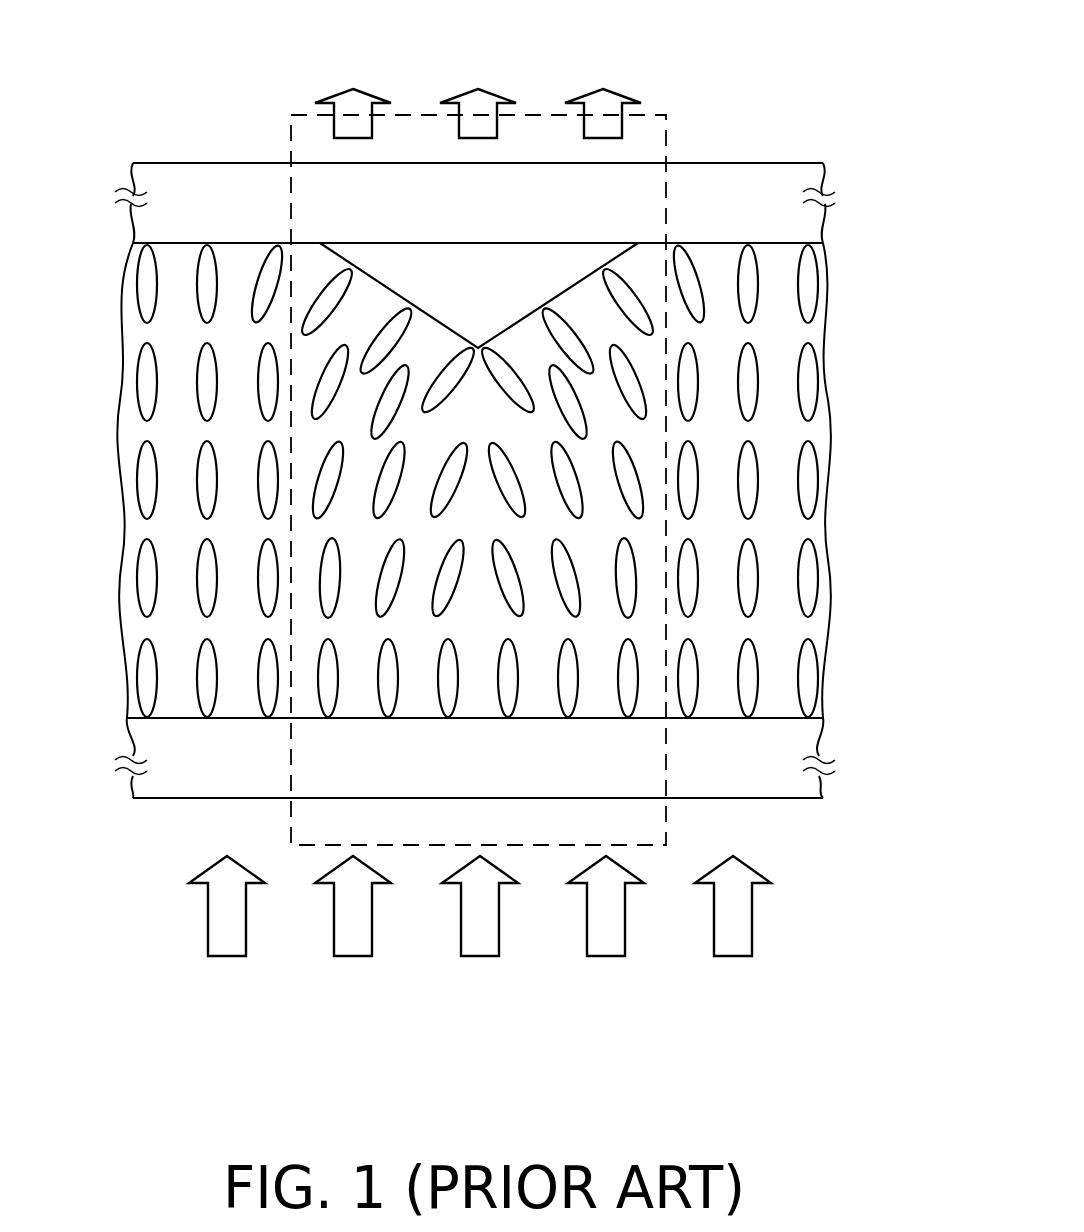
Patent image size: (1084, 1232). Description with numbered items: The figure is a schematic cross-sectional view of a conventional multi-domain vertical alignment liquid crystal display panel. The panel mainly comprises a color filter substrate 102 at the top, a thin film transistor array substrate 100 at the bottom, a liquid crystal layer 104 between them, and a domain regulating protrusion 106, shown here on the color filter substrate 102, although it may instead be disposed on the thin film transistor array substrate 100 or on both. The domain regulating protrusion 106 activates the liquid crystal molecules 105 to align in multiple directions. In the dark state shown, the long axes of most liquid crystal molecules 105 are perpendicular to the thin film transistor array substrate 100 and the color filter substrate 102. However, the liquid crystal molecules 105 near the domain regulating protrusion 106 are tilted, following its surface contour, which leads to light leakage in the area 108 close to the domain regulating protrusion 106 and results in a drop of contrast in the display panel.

The thin film transistor array substrate 100 is at (793, 741).
The color filter substrate 102 is at (801, 181).
The liquid crystal layer 104 is at (818, 435).
The liquid crystal molecules 105 is at (142, 383).
The domain regulating protrusion 106 is at (530, 285).
The area 108 is at (665, 220).